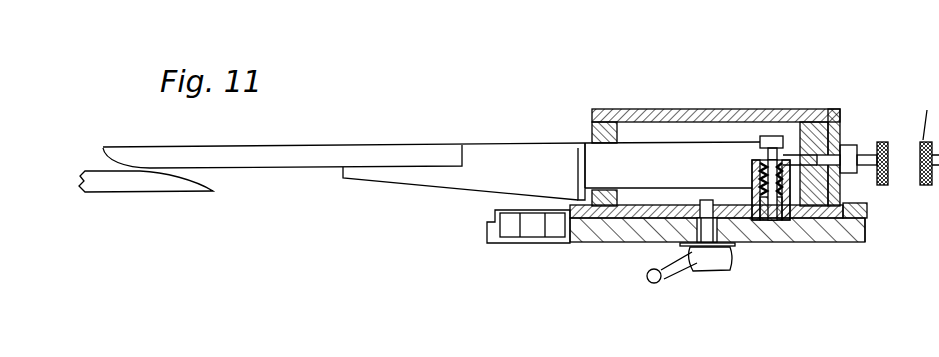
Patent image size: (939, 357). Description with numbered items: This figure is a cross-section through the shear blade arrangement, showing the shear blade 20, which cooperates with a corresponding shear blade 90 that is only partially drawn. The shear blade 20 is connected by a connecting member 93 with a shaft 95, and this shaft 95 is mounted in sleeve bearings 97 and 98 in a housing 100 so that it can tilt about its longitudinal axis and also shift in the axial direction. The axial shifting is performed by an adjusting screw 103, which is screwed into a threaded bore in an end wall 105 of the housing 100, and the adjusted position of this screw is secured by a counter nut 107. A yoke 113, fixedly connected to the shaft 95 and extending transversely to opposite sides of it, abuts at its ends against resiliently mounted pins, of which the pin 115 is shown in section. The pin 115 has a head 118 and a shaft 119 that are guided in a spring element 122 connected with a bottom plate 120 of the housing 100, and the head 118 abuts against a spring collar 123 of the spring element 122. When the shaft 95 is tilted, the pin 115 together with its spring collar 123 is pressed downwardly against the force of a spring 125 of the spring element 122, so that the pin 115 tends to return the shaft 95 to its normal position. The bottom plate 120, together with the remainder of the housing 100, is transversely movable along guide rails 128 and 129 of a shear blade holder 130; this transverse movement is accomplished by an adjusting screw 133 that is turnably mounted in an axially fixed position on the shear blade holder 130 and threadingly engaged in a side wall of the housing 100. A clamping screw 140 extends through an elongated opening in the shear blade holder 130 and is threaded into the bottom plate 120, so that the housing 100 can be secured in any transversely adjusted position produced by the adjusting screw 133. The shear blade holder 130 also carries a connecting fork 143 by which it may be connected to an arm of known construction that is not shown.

The shear blade 20 is at (301, 130).
The shear blade 90 is at (182, 207).
The connecting member 93 is at (487, 142).
The shaft 95 is at (660, 152).
The sleeve bearing 97 is at (592, 137).
The sleeve bearing 98 is at (818, 120).
The housing 100 is at (702, 137).
The adjusting screw 103 is at (885, 140).
The end wall 105 is at (838, 112).
The counter nut 107 is at (843, 140).
The yoke 113 is at (772, 137).
The pin 115 is at (752, 155).
The head 118 is at (797, 180).
The shaft 119 is at (868, 205).
The bottom plate 120 is at (600, 226).
The spring element 122 is at (740, 195).
The spring collar 123 is at (752, 163).
The spring 125 is at (731, 180).
The guide rail 128 is at (868, 222).
The guide rail 129 is at (577, 200).
The shear blade holder 130 is at (836, 252).
The adjusting screw 133 is at (728, 265).
The clamping screw 140 is at (716, 257).
The connecting fork 143 is at (507, 240).